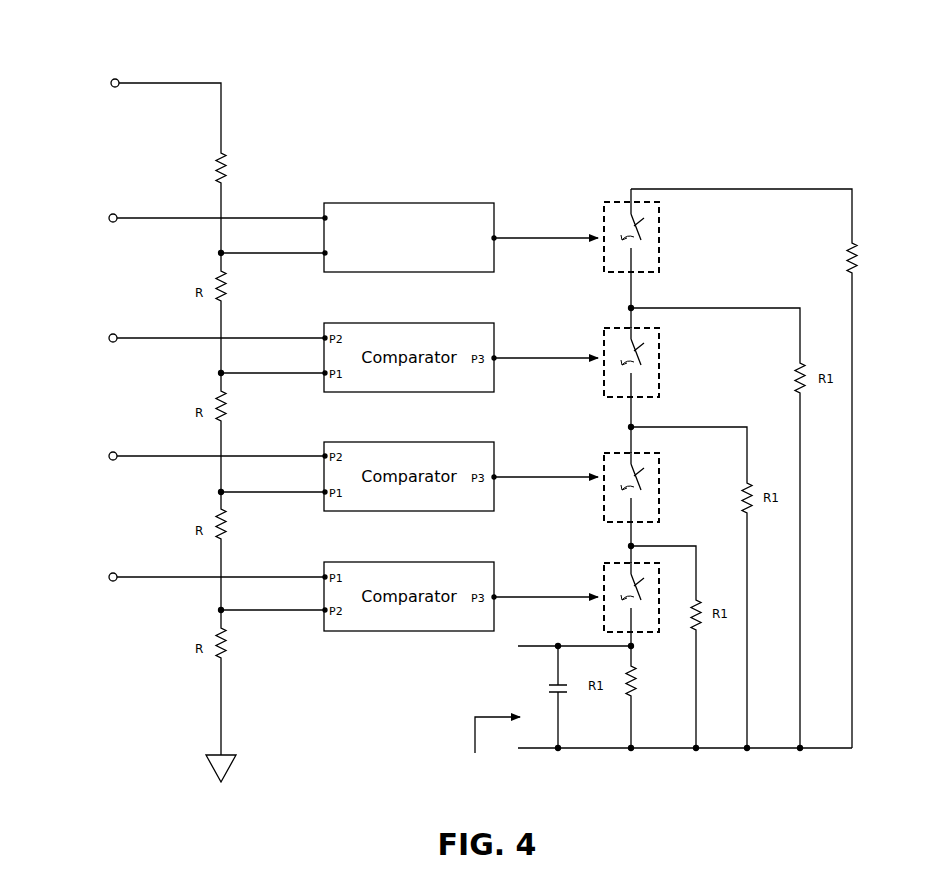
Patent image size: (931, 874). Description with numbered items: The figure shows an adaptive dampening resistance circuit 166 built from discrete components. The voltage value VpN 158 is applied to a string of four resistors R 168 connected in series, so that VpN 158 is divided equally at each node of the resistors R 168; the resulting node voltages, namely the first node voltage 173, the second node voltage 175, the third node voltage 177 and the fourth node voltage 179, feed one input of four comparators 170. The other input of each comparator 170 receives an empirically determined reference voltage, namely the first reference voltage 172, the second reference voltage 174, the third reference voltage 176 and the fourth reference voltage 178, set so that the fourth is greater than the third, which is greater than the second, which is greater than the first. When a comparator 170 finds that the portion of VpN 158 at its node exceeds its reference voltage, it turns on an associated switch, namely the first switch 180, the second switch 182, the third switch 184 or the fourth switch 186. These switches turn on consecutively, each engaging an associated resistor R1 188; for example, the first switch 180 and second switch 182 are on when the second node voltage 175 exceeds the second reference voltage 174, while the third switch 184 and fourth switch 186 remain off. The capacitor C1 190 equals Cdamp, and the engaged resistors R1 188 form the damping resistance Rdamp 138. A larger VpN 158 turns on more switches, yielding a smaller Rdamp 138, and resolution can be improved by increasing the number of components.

The dampening resistance circuit 166 is at (214, 40).
The voltage value VpN 158 is at (119, 86).
The resistors R 168 is at (232, 175).
The comparators 170 is at (360, 203).
The reference voltage Vr1 172 is at (110, 577).
The reference voltage Vr2 174 is at (110, 456).
The reference voltage Vr3 176 is at (110, 338).
The reference voltage Vr4 178 is at (110, 218).
The node voltage V1 173 is at (219, 610).
The node voltage V2 175 is at (221, 492).
The node voltage V3 177 is at (221, 373).
The node voltage V4 179 is at (221, 253).
The switch S1 180 is at (603, 592).
The switch S2 182 is at (603, 503).
The switch S3 184 is at (603, 350).
The switch S4 186 is at (603, 232).
The resistor R1 188 is at (850, 248).
The capacitor C1 190 is at (556, 683).
The damping resistance Rdamp 138 is at (465, 773).